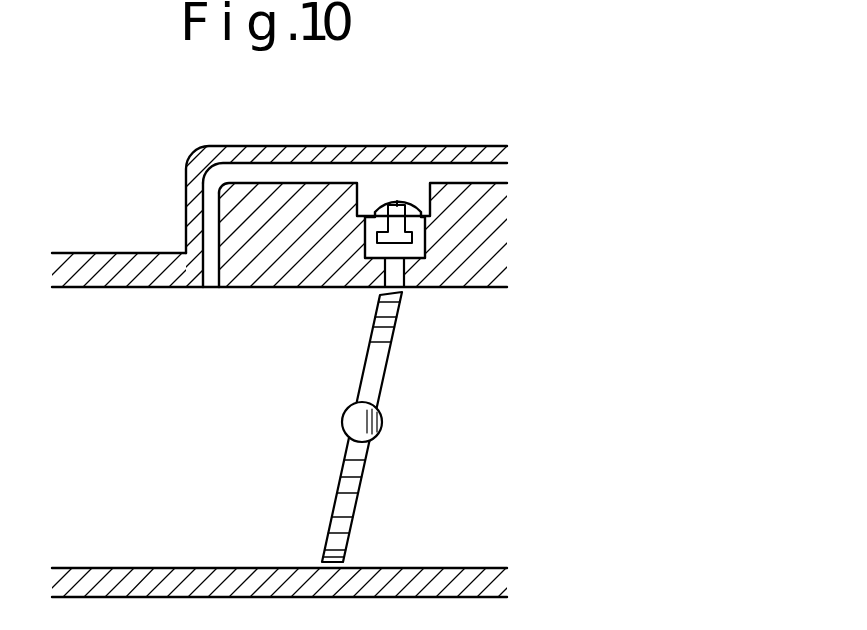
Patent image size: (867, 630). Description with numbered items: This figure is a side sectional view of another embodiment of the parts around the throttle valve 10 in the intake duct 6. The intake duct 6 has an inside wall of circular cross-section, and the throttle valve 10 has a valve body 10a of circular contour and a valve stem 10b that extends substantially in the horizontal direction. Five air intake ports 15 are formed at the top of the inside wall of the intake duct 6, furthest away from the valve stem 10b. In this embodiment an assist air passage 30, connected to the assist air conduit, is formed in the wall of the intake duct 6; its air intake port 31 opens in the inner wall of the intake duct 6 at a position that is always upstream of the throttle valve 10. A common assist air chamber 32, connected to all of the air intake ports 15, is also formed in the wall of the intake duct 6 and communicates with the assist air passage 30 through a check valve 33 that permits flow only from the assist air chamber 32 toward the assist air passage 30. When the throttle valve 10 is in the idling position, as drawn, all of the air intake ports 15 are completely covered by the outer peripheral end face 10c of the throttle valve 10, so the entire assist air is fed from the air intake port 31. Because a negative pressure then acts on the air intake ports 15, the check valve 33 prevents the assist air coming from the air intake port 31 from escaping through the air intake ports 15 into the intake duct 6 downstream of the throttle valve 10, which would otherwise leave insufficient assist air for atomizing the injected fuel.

The intake duct 6 is at (118, 268).
The assist air passage 30 is at (316, 173).
The air intake port 31 is at (205, 300).
The assist air chamber 32 is at (365, 238).
The check valve 33 is at (401, 203).
The air intake ports 15 is at (398, 268).
The throttle valve 10 is at (358, 426).
The valve body 10a is at (348, 483).
The valve stem 10b is at (381, 424).
The outer peripheral end face 10c is at (414, 291).